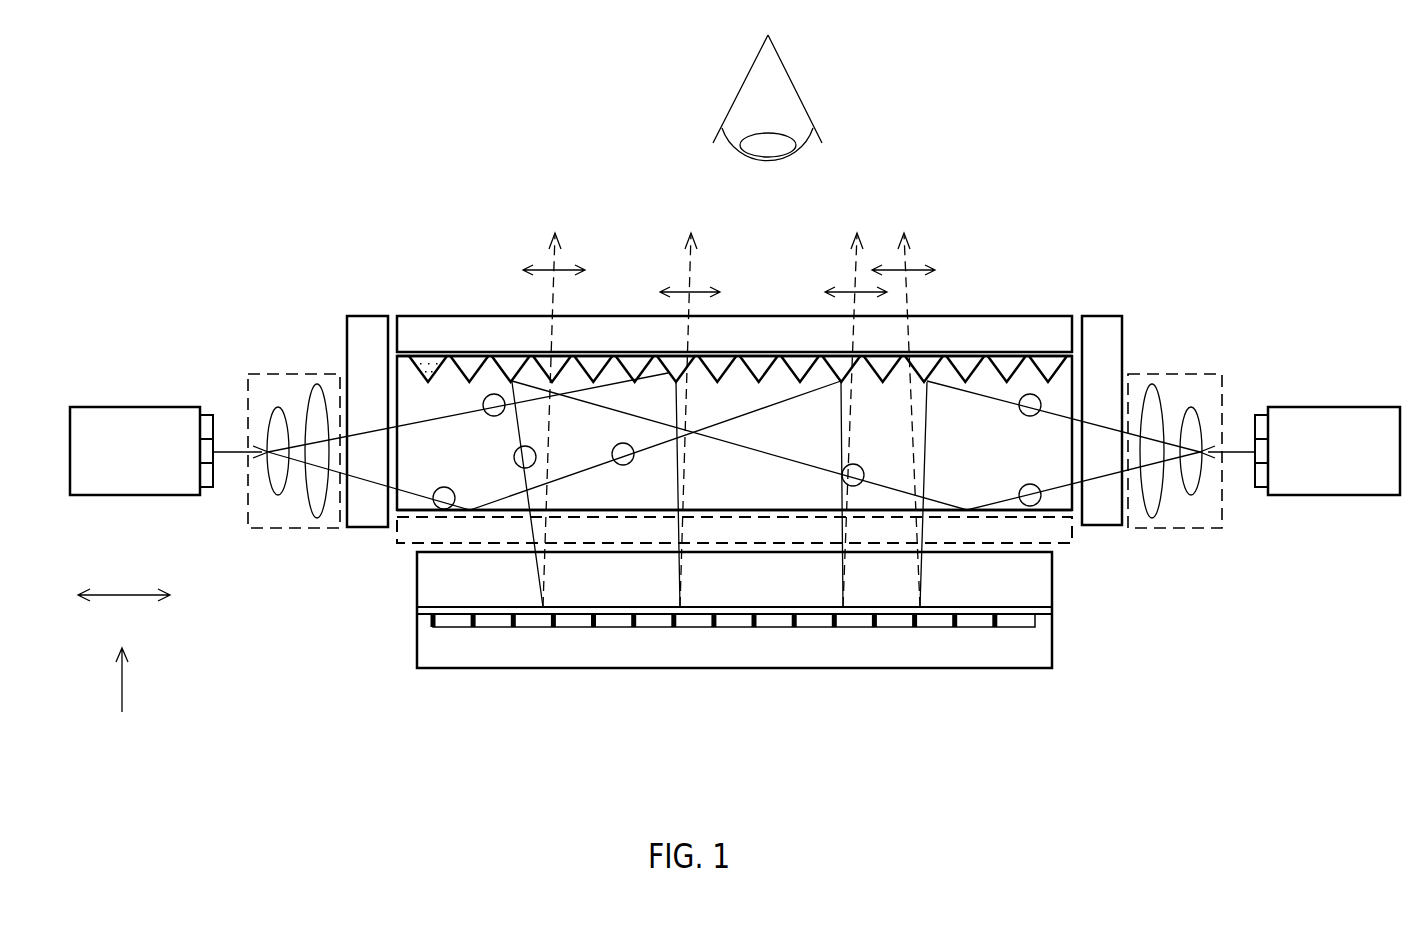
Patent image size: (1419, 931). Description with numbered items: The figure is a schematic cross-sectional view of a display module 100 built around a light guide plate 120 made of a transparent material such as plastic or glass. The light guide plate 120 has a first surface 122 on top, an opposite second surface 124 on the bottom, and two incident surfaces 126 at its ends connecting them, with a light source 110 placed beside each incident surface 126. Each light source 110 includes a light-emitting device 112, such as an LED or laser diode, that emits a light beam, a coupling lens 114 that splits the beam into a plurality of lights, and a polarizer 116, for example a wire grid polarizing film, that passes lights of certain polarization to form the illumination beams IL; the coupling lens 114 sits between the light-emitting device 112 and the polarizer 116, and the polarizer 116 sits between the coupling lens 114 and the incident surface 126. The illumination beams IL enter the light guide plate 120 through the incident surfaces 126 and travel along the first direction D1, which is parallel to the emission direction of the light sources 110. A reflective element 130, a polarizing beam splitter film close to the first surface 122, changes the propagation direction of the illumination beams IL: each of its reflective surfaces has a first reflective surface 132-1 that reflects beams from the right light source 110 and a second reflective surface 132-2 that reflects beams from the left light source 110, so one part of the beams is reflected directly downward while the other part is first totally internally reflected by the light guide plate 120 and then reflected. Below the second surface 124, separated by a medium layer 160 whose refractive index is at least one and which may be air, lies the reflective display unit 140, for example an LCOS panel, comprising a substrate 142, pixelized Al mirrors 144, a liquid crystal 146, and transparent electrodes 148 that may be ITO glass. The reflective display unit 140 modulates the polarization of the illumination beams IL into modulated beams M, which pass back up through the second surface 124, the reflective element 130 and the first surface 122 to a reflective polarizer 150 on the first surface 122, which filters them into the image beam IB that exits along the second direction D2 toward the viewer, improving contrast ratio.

The display module 100 is at (1316, 742).
The light source 110 is at (1295, 604).
The light-emitting device 112 is at (1302, 497).
The coupling lens 114 is at (1200, 528).
The polarizer 116 is at (1113, 522).
The light guide plate 120 is at (403, 367).
The first surface 122 is at (401, 348).
The second surface 124 is at (456, 514).
The incident surface 126 is at (405, 507).
The reflective element 130 is at (1143, 192).
The first reflective surface 132-1 is at (1052, 367).
The second reflective surface 132-2 is at (957, 360).
The reflective display unit 140 is at (650, 731).
The substrate 142 is at (622, 653).
The pixelized Al mirrors 144 is at (570, 623).
The liquid crystal 146 is at (500, 610).
The transparent electrodes 148 is at (447, 597).
The reflective polarizer 150 is at (465, 328).
The medium layer 160 is at (1000, 556).
The illumination beams IL is at (1233, 447).
The image beam IB is at (892, 242).
The modulated beams M is at (913, 576).
The first direction D1 is at (124, 576).
The second direction D2 is at (140, 680).